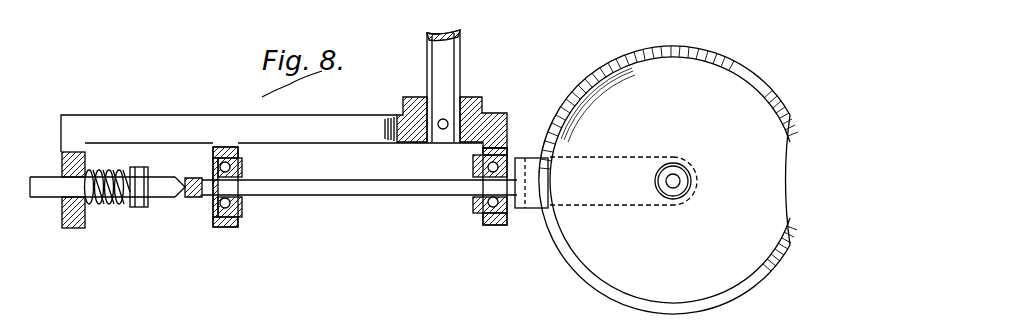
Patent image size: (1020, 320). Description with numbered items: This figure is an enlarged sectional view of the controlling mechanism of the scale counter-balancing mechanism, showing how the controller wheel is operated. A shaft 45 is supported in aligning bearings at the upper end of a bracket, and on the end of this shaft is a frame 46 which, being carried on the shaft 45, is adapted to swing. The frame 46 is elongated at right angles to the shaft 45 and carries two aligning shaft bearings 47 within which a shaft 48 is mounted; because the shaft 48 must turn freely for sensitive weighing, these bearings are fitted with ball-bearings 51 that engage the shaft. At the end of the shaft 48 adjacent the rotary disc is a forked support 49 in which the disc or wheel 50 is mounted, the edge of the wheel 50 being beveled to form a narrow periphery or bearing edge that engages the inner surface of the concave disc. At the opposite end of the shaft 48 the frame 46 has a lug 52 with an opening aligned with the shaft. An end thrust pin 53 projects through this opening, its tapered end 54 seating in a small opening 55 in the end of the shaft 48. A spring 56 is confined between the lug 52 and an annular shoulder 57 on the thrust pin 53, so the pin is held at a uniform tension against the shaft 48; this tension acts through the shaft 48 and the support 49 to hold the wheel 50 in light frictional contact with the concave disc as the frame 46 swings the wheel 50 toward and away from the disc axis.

The shaft 45 is at (458, 57).
The frame 46 is at (175, 117).
The shaft bearings 47 is at (227, 228).
The shaft 48 is at (337, 196).
The forked support 49 is at (532, 158).
The wheel 50 is at (668, 180).
The ball-bearings 51 is at (218, 213).
The lug 52 is at (78, 229).
The end thrust pin 53 is at (42, 177).
The tapered end 54 is at (182, 180).
The small opening 55 is at (195, 194).
The spring 56 is at (108, 205).
The annular shoulder 57 is at (135, 208).